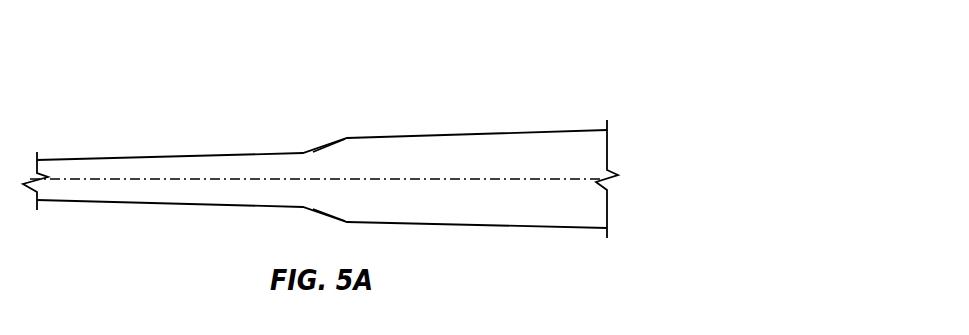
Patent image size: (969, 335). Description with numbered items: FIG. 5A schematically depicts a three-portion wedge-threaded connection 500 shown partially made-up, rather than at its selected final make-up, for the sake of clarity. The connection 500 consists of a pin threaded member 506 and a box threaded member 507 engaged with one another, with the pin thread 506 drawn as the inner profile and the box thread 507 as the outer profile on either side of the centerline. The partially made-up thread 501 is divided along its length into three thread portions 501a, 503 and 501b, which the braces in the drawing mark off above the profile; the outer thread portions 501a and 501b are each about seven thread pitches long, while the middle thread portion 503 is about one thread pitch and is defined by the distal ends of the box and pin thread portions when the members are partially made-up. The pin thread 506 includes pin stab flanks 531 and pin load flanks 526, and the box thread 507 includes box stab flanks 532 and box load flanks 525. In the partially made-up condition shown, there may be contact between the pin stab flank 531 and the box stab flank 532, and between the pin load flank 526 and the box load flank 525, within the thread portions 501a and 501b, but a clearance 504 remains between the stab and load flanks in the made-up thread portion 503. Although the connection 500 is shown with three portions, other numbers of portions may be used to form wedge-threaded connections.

The three-portion wedge-threaded connection 500 is at (553, 53).
The thread 501 is at (508, 58).
The thread portion 501a is at (303, 120).
The thread portion 501b is at (608, 120).
The thread portion 503 is at (348, 120).
The clearance 504 is at (325, 217).
The pin threaded member 506 is at (407, 168).
The box threaded member 507 is at (216, 145).
The box load flank 525 is at (574, 133).
The pin load flank 526 is at (521, 134).
The pin stab flank 531 is at (522, 225).
The box stab flank 532 is at (577, 226).